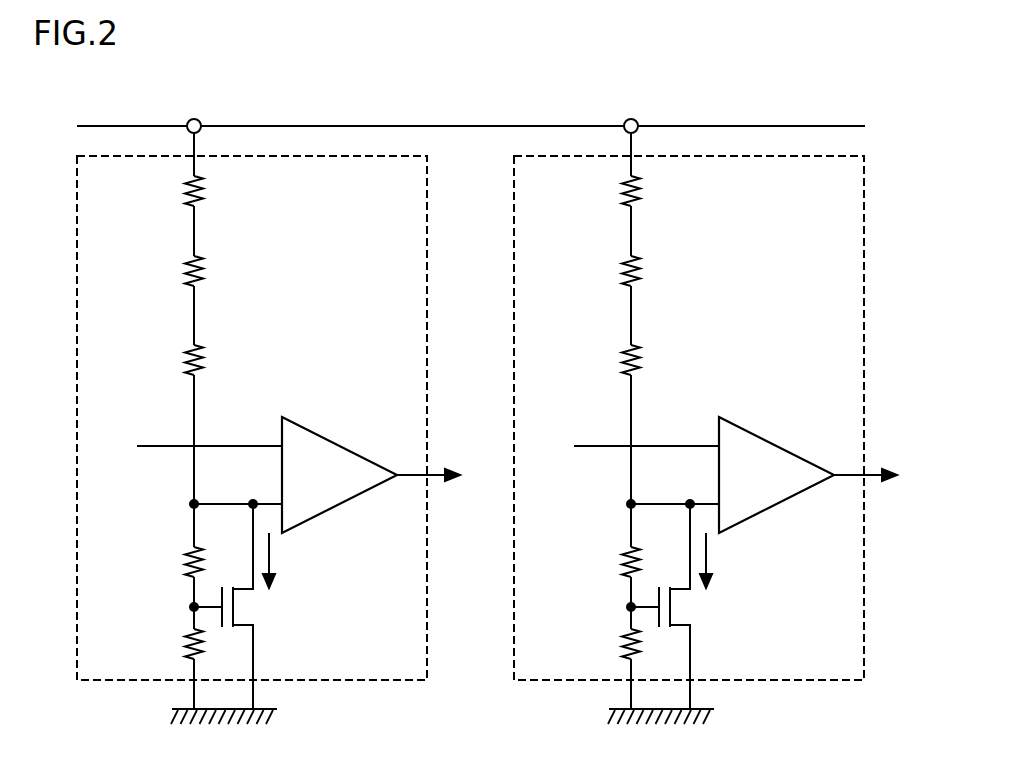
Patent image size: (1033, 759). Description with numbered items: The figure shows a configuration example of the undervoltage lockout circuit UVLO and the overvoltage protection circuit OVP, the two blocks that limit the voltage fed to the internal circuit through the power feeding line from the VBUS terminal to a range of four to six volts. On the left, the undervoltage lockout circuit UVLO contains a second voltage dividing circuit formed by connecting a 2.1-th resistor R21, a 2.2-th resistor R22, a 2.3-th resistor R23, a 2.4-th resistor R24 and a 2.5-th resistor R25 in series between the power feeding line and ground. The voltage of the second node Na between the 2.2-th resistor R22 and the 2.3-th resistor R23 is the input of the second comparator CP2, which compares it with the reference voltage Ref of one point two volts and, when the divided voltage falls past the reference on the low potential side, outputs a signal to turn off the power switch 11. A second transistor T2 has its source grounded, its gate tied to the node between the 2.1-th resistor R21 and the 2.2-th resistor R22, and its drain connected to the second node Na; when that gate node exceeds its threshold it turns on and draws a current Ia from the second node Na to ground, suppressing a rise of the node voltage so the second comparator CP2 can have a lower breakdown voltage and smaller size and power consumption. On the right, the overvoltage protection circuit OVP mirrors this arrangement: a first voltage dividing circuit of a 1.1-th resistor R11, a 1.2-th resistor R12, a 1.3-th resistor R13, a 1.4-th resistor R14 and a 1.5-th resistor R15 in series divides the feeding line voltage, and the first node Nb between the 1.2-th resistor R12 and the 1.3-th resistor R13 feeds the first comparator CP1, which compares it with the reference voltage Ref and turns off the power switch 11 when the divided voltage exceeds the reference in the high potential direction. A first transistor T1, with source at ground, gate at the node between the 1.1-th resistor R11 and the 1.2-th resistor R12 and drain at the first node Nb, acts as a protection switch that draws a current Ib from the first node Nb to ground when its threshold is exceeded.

The power switch 11 is at (666, 476).
The undervoltage lockout circuit UVLO is at (427, 242).
The overvoltage protection circuit OVP is at (865, 238).
The first comparator CP1 is at (747, 430).
The second comparator CP2 is at (310, 430).
The first transistor T1 is at (673, 606).
The second transistor T2 is at (236, 606).
The 1.1-th resistor R11 is at (606, 644).
The 1.2-th resistor R12 is at (606, 562).
The 1.3-th resistor R13 is at (606, 360).
The 1.4-th resistor R14 is at (606, 271).
The 1.5-th resistor R15 is at (606, 191).
The 2.1-th resistor R21 is at (169, 644).
The 2.2-th resistor R22 is at (169, 562).
The 2.3-th resistor R23 is at (169, 360).
The 2.4-th resistor R24 is at (169, 271).
The 2.5-th resistor R25 is at (169, 191).
The second node Na is at (217, 493).
The first node Nb is at (654, 493).
The current Ia is at (280, 560).
The current Ib is at (717, 560).
The VBUS terminal VBUS is at (471, 114).
The reference voltage Ref is at (185, 445).